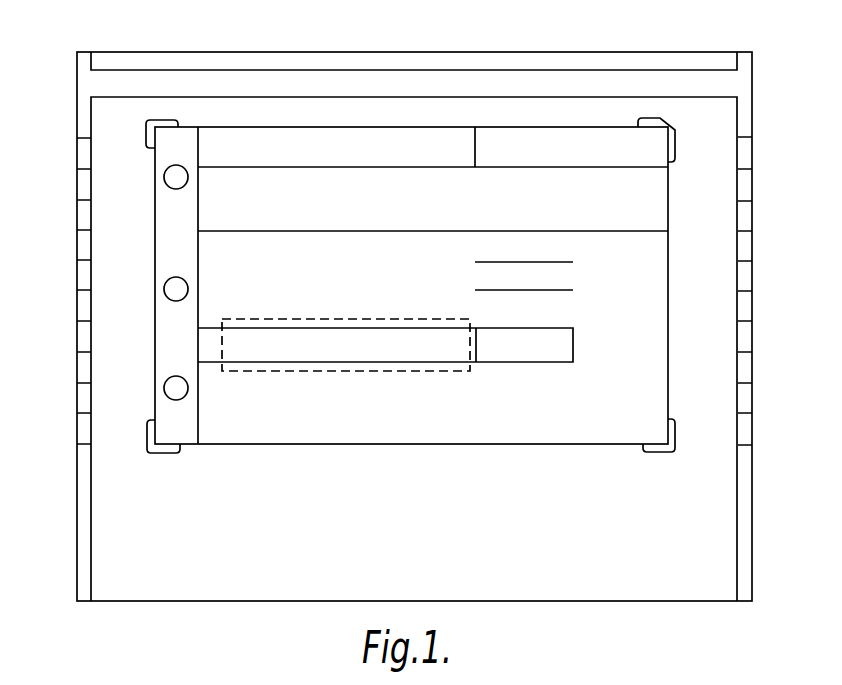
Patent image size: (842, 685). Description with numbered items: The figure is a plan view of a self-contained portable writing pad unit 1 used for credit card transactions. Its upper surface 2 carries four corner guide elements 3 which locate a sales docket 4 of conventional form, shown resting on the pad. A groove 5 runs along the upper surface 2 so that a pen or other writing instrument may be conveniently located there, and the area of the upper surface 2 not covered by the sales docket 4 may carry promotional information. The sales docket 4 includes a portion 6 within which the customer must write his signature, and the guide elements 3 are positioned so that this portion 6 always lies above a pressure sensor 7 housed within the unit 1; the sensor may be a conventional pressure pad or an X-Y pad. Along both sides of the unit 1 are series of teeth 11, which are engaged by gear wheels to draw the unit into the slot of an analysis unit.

The writing pad unit 1 is at (677, 590).
The upper surface 2 is at (690, 573).
The corner guide elements 3 is at (146, 128).
The sales docket 4 is at (648, 282).
The groove 5 is at (665, 82).
The portion 6 is at (343, 328).
The pressure sensor 7 is at (413, 319).
The teeth 11 is at (82, 310).